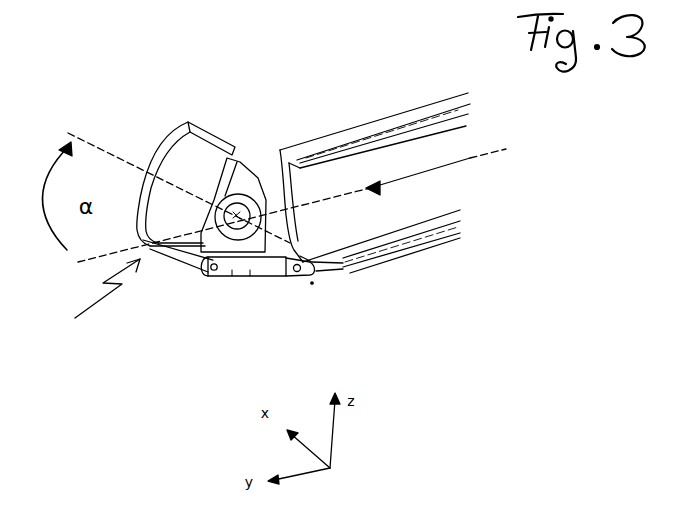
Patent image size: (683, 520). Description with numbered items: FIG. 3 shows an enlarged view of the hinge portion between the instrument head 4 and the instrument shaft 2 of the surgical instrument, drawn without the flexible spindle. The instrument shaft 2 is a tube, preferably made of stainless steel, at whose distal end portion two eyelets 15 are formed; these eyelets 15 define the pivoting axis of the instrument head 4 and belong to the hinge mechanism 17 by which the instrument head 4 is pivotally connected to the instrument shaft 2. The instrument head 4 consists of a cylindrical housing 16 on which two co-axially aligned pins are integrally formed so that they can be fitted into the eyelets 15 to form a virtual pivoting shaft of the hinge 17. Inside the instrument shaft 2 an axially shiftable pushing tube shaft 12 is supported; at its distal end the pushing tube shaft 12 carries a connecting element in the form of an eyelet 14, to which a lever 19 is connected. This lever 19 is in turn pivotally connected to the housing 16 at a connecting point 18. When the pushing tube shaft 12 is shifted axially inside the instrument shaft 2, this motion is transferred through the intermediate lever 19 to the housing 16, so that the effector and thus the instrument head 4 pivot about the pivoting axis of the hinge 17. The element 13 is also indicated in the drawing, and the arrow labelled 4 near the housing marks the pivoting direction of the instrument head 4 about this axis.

The instrument shaft 2 is at (447, 93).
The instrument head 4 is at (96, 308).
The pushing tube shaft 12 is at (347, 167).
The fastening bracket 13 is at (333, 264).
The eyelet 14 is at (296, 279).
The eyelets 15 is at (258, 186).
The cylindrical housing 16 is at (212, 134).
The hinge mechanism 17 is at (245, 180).
The connecting point 18 is at (211, 278).
The lever 19 is at (258, 277).